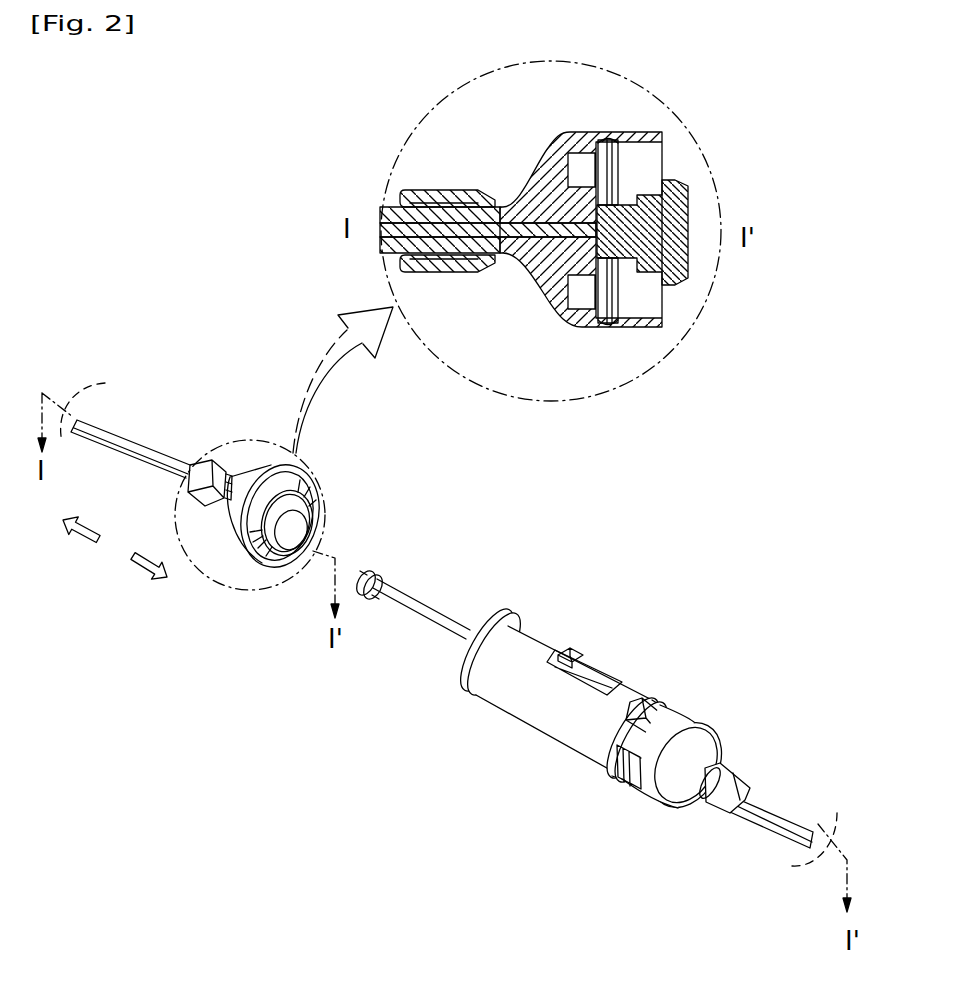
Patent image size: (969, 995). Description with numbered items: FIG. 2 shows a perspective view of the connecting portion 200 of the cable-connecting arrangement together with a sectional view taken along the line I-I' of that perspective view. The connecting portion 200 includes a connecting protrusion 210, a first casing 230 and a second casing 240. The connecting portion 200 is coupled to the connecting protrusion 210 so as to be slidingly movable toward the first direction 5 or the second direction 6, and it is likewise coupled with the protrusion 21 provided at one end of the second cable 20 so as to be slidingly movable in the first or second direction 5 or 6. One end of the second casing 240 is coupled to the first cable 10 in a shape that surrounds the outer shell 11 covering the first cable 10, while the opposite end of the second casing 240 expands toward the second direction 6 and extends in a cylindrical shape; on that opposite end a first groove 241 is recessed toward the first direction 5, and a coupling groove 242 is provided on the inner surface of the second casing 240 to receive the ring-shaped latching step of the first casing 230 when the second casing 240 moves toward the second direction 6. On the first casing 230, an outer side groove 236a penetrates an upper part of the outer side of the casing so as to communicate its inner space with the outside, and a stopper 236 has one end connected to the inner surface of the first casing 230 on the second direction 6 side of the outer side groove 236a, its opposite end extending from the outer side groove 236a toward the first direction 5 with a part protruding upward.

The connecting portion 200 is at (224, 300).
The first cable 10 is at (145, 448).
The outer shell 11 is at (465, 242).
The second casing 240 is at (242, 540).
The connecting protrusion 210 is at (298, 543).
The first groove 241 is at (638, 292).
The coupling groove 242 is at (605, 160).
The first casing 230 is at (718, 586).
The stopper 236 is at (606, 683).
The outer side groove 236a is at (575, 656).
The second cable 20 is at (431, 620).
The protrusion 21 is at (372, 594).
The first direction 5 is at (74, 521).
The second direction 6 is at (158, 578).